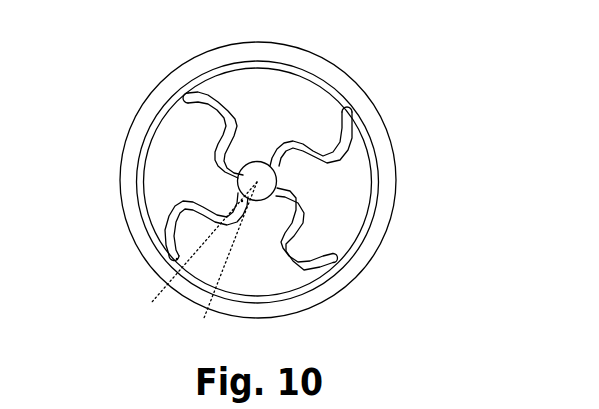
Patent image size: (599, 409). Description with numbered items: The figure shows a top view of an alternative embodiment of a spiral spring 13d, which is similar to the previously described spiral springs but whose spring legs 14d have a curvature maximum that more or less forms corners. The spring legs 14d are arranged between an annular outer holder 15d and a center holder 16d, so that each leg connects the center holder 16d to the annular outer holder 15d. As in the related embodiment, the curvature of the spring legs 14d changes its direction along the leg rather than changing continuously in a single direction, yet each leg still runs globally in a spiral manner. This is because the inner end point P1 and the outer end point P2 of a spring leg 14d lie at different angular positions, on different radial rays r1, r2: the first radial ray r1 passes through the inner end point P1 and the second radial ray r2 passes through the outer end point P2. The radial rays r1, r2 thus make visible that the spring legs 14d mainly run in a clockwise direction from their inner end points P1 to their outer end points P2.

The spiral spring 13d is at (128, 54).
The spring legs 14d is at (182, 225).
The annular outer holder 15d is at (366, 114).
The center holder 16d is at (263, 184).
The inner end point P1 is at (242, 201).
The outer end point P2 is at (177, 259).
The first radial ray r1 is at (216, 261).
The second radial ray r2 is at (188, 251).